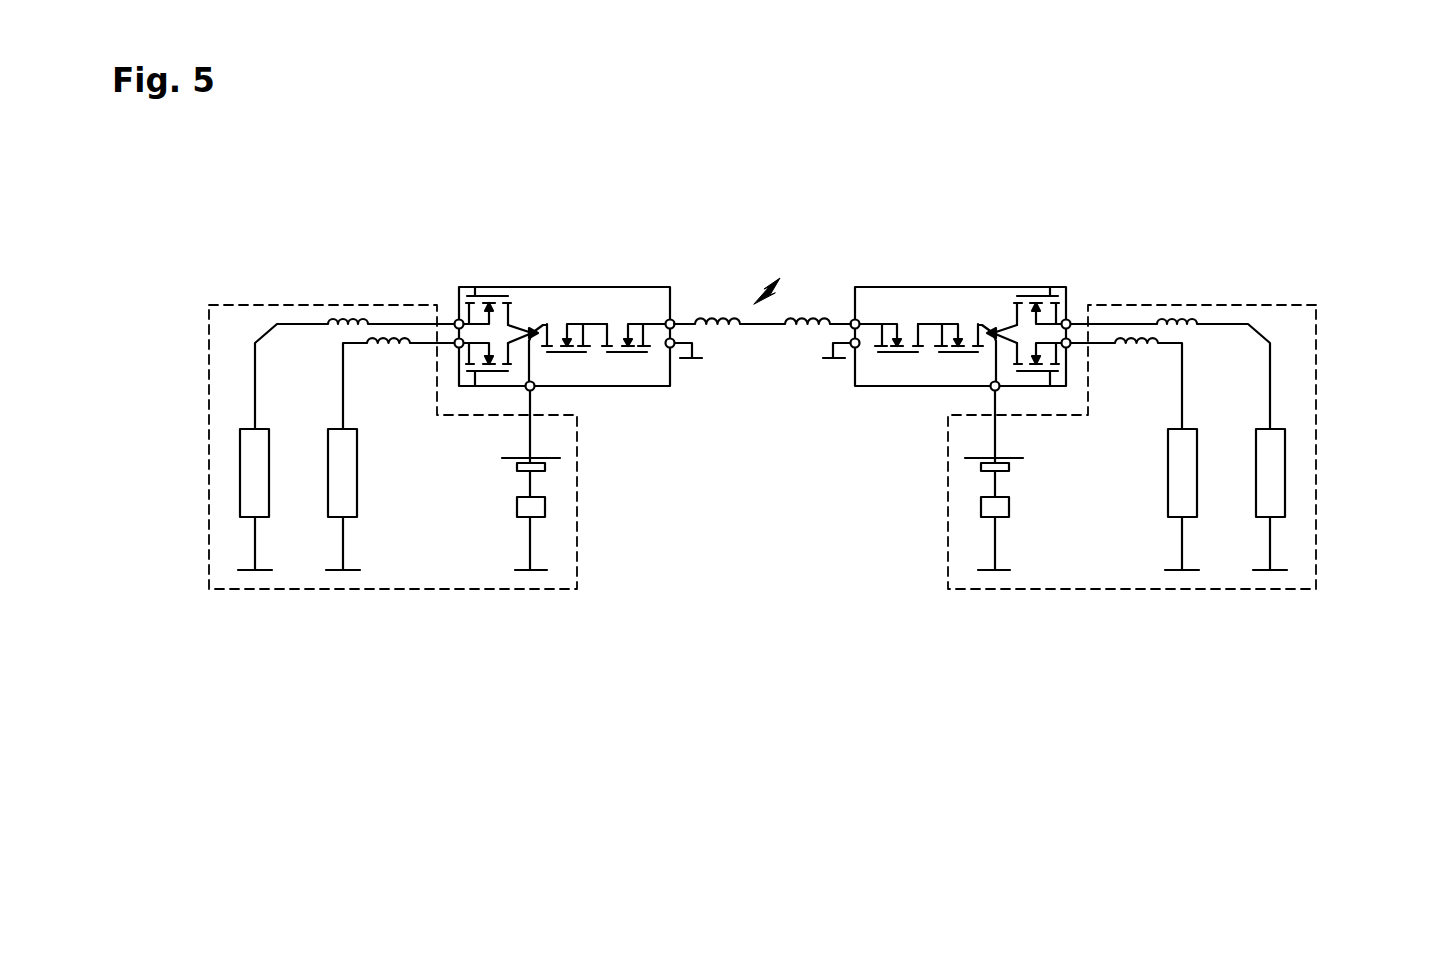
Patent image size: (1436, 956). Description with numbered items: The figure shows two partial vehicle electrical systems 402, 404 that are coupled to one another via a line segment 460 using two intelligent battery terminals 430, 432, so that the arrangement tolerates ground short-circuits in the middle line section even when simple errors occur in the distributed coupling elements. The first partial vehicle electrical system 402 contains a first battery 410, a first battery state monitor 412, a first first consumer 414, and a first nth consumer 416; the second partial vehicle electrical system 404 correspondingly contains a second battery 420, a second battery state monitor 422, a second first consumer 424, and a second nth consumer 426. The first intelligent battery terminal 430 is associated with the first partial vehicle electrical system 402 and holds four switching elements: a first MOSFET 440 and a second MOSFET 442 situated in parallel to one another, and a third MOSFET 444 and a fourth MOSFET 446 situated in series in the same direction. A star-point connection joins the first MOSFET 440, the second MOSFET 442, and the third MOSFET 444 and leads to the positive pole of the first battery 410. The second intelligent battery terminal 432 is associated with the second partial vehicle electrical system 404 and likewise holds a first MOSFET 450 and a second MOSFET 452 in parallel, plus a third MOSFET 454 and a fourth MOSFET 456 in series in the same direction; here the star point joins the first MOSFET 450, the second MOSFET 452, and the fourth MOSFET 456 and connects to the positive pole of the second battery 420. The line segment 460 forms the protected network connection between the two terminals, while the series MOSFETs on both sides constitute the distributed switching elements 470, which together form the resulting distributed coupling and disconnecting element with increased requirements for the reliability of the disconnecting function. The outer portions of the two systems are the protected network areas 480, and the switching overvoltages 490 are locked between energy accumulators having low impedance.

The first partial vehicle electrical system 402 is at (393, 497).
The second partial vehicle electrical system 404 is at (1132, 497).
The first battery 410 is at (545, 467).
The first battery state monitor 412 is at (545, 505).
The first first consumer 414 is at (240, 470).
The first nth consumer 416 is at (328, 498).
The second battery 420 is at (981, 466).
The second battery state monitor 422 is at (981, 504).
The second first consumer 424 is at (1197, 498).
The second nth consumer 426 is at (1285, 468).
The first intelligent battery terminal 430 is at (560, 336).
The second intelligent battery terminal 432 is at (965, 336).
The first MOSFET 440 is at (474, 287).
The second MOSFET 442 is at (475, 386).
The third MOSFET 444 is at (585, 353).
The fourth MOSFET 446 is at (645, 353).
The first MOSFET 450 is at (1050, 296).
The second MOSFET 452 is at (1050, 386).
The third MOSFET 454 is at (880, 353).
The fourth MOSFET 456 is at (940, 353).
The line segment 460 is at (833, 375).
The distributed switching elements 470 is at (658, 277).
The protected network areas 480 is at (465, 268).
The switching overvoltages 490 is at (1000, 197).